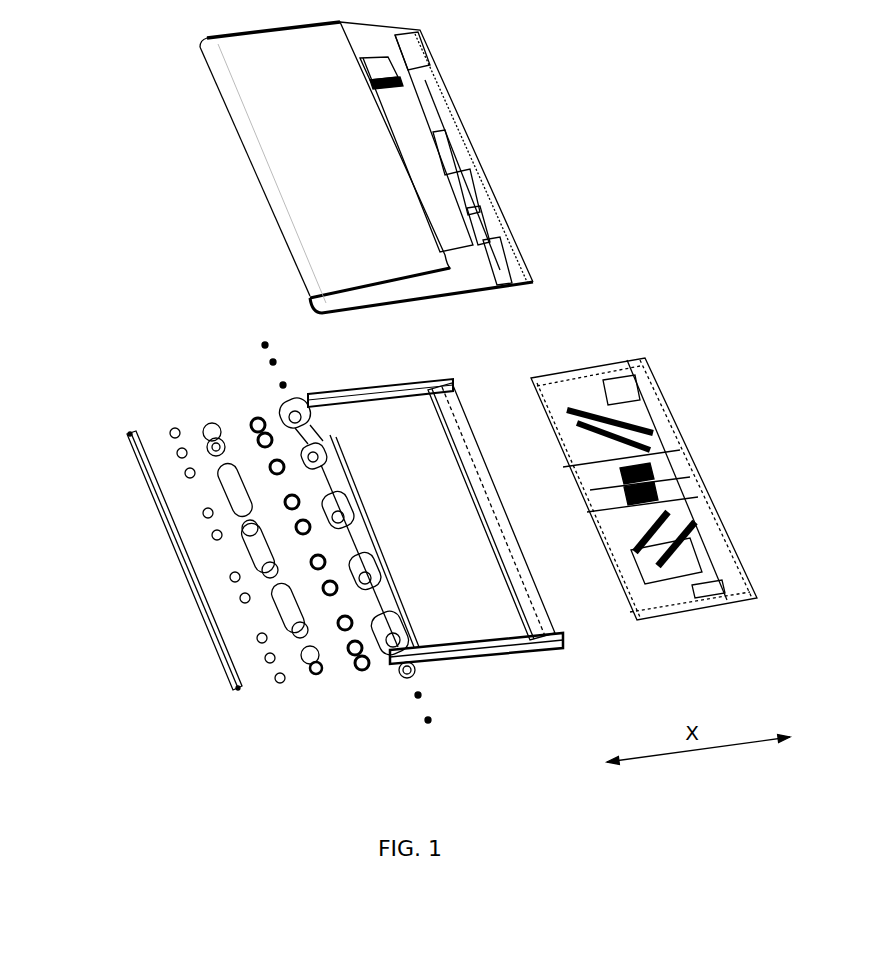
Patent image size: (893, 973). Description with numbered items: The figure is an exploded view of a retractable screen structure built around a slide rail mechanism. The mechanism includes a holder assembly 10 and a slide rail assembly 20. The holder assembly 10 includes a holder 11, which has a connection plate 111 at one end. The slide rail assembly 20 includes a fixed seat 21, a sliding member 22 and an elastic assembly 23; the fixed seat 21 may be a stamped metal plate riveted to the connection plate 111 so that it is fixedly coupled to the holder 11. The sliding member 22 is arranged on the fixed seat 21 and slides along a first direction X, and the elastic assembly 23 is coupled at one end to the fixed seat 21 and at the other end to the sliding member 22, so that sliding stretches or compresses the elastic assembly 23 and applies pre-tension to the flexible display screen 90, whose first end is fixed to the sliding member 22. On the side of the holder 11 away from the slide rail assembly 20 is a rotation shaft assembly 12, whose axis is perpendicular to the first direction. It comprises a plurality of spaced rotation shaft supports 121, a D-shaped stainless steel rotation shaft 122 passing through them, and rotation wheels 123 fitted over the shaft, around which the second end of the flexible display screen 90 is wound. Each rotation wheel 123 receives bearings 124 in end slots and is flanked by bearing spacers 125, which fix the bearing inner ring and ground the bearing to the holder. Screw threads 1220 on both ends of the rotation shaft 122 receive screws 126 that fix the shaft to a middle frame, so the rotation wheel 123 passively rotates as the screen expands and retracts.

The holder assembly 10 is at (431, 582).
The holder 11 is at (497, 647).
The connection plate 111 is at (483, 503).
The rotation shaft support 121 is at (302, 443).
The rotation shaft assembly 12 is at (250, 541).
The rotation shaft 122 is at (173, 548).
The screw threads 1220 is at (128, 433).
The rotation wheel 123 is at (212, 430).
The bearing 124 is at (360, 675).
The bearing spacer 125 is at (175, 433).
The screw 126 is at (270, 362).
The slide rail assembly 20 is at (652, 488).
The fixed seat 21 is at (673, 600).
The sliding member 22 is at (705, 528).
The elastic assembly 23 is at (602, 422).
The flexible display screen 90 is at (290, 130).